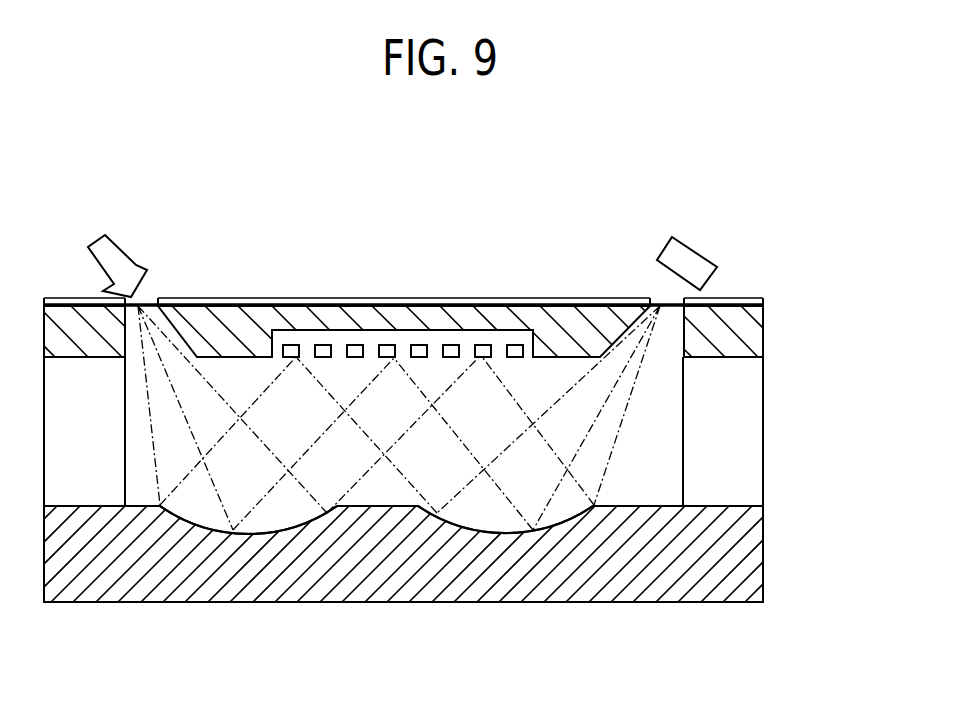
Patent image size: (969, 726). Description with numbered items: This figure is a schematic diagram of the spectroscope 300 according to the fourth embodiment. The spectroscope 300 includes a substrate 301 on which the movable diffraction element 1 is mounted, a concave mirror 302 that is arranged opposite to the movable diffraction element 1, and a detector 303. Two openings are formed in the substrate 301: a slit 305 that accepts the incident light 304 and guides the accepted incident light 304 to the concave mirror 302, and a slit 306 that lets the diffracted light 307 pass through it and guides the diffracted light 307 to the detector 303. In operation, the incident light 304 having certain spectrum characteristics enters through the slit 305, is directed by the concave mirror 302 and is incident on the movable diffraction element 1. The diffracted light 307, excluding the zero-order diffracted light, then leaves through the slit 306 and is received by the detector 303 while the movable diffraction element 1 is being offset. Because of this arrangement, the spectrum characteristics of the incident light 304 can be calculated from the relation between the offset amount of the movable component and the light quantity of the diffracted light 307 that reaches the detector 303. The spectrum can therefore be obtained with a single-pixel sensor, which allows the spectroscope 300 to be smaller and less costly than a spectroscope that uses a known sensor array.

The spectroscope 300 is at (788, 218).
The substrate 301 is at (754, 335).
The concave mirror 302 is at (270, 533).
The detector 303 is at (690, 259).
The incident light 304 is at (117, 261).
The slit 305 is at (150, 301).
The slit 306 is at (655, 304).
The diffracted light 307 is at (620, 433).
The movable diffraction element 1 is at (405, 334).